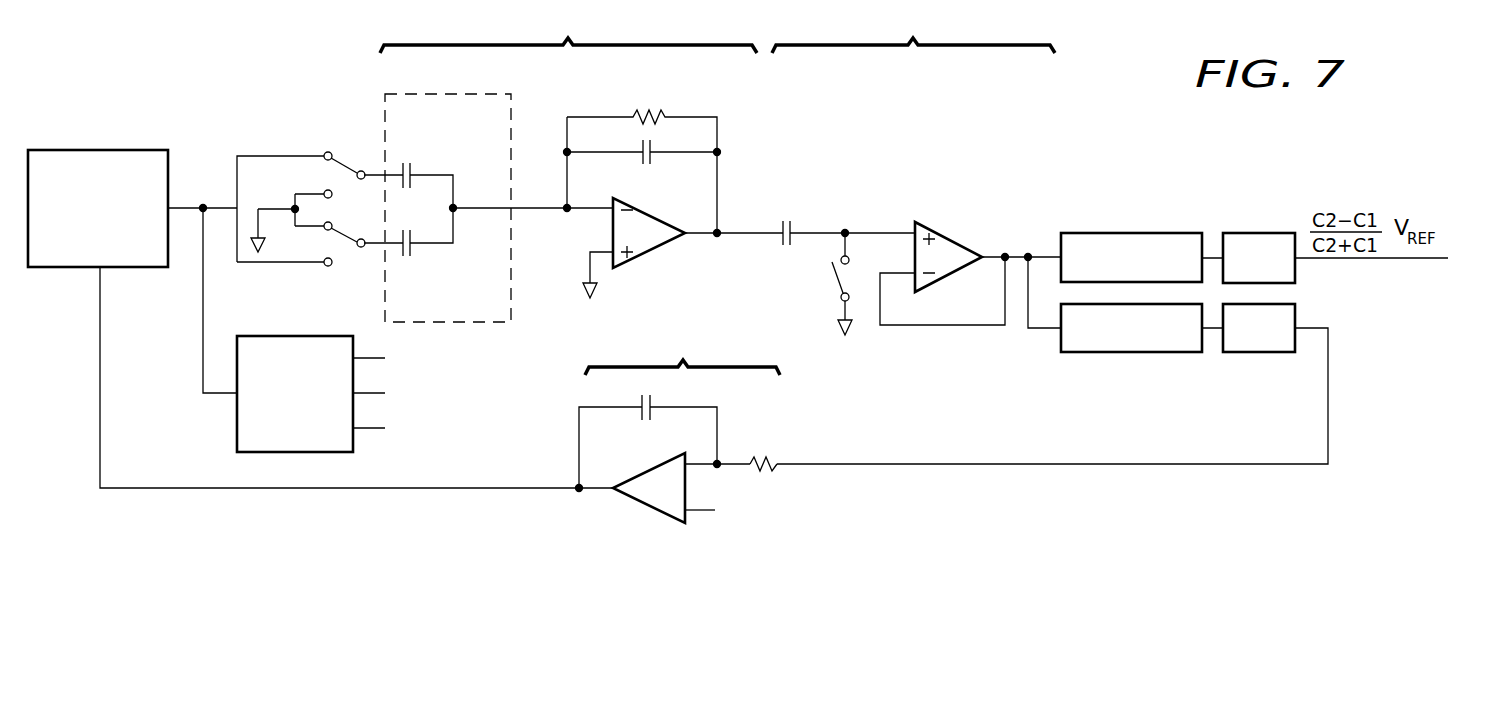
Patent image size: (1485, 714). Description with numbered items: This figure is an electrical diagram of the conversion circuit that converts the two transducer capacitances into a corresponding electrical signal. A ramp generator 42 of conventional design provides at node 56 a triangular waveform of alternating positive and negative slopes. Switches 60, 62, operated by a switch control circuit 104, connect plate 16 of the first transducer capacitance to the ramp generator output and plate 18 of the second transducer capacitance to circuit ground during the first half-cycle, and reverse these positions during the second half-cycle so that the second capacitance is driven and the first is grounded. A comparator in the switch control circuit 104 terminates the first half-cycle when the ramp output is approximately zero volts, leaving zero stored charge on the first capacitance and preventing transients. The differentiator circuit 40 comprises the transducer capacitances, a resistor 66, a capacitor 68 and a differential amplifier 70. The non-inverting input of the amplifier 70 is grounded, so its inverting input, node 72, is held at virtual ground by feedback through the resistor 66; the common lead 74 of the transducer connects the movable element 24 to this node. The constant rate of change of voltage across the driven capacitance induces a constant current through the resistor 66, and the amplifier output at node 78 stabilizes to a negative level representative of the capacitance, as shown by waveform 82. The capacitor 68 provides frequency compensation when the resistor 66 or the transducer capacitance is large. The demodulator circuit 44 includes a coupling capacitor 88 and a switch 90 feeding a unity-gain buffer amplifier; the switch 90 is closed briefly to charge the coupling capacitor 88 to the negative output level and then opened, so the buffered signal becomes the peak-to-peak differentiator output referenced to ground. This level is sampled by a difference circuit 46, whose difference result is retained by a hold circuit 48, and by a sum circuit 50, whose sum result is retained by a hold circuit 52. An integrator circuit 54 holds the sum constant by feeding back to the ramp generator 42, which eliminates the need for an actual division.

The plate 16 is at (410, 160).
The plate 18 is at (412, 258).
The movable element 24 is at (497, 206).
The differentiator circuit 40 is at (568, 32).
The ramp generator 42 is at (98, 150).
The demodulator circuit 44 is at (913, 32).
The difference circuit 46 is at (1132, 233).
The hold circuit 48 is at (1260, 233).
The sum circuit 50 is at (1132, 352).
The hold circuit 52 is at (1254, 352).
The integrator circuit 54 is at (678, 432).
The node 56 is at (202, 204).
The switch 60 is at (344, 162).
The switch 62 is at (342, 240).
The resistor 66 is at (652, 110).
The capacitor 68 is at (652, 162).
The differential amplifier 70 is at (648, 252).
The node 72 is at (563, 212).
The common lead 74 is at (562, 206).
The node 78 is at (718, 240).
The waveform 82 is at (956, 234).
The coupling capacitor 88 is at (788, 220).
The switch 90 is at (832, 284).
The switch control circuit 104 is at (292, 336).